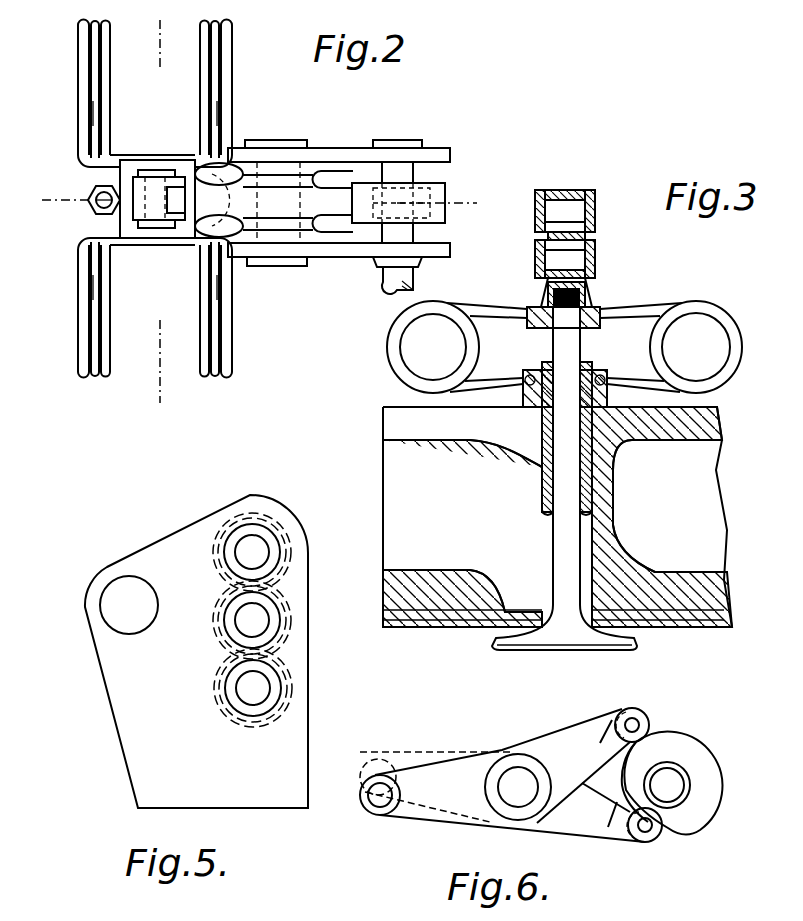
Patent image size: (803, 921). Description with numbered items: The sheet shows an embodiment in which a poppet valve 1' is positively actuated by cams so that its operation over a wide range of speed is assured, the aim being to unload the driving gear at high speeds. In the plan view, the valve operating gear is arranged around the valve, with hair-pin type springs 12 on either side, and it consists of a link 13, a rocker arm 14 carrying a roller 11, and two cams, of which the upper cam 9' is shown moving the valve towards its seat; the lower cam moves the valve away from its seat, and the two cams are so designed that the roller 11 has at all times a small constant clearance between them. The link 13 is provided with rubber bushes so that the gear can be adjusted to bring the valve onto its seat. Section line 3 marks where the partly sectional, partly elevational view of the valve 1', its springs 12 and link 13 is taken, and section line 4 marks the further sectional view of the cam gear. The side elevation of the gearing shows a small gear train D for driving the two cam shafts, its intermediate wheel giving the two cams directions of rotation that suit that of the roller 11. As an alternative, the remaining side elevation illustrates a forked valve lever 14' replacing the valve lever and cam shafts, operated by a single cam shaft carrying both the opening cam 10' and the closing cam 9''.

In FIG. 3, the valve 1' is at (565, 509).
In FIG. 2, the section line 3— 3 is at (170, 20).
In FIG. 2, the section line 4— 4 is at (62, 183).
In FIG. 2, the upper cam 9' is at (393, 169).
In FIG. 6, the closing cam 9'' is at (681, 778).
In FIG. 6, the opening cam 10' is at (677, 753).
In FIG. 2, the roller 11 is at (367, 206).
In FIG. 2, the hair-pin type springs 12 is at (93, 78).
In FIG. 3, the hair-pin type springs 12 is at (393, 362).
In FIG. 3, the link 13 is at (594, 218).
In FIG. 2, the rocker arm 14 is at (322, 184).
In FIG. 3, the rocker arm 14 is at (583, 198).
In FIG. 6, the forked valve lever 14' is at (511, 786).
In FIG. 5, the small gear train D is at (292, 587).